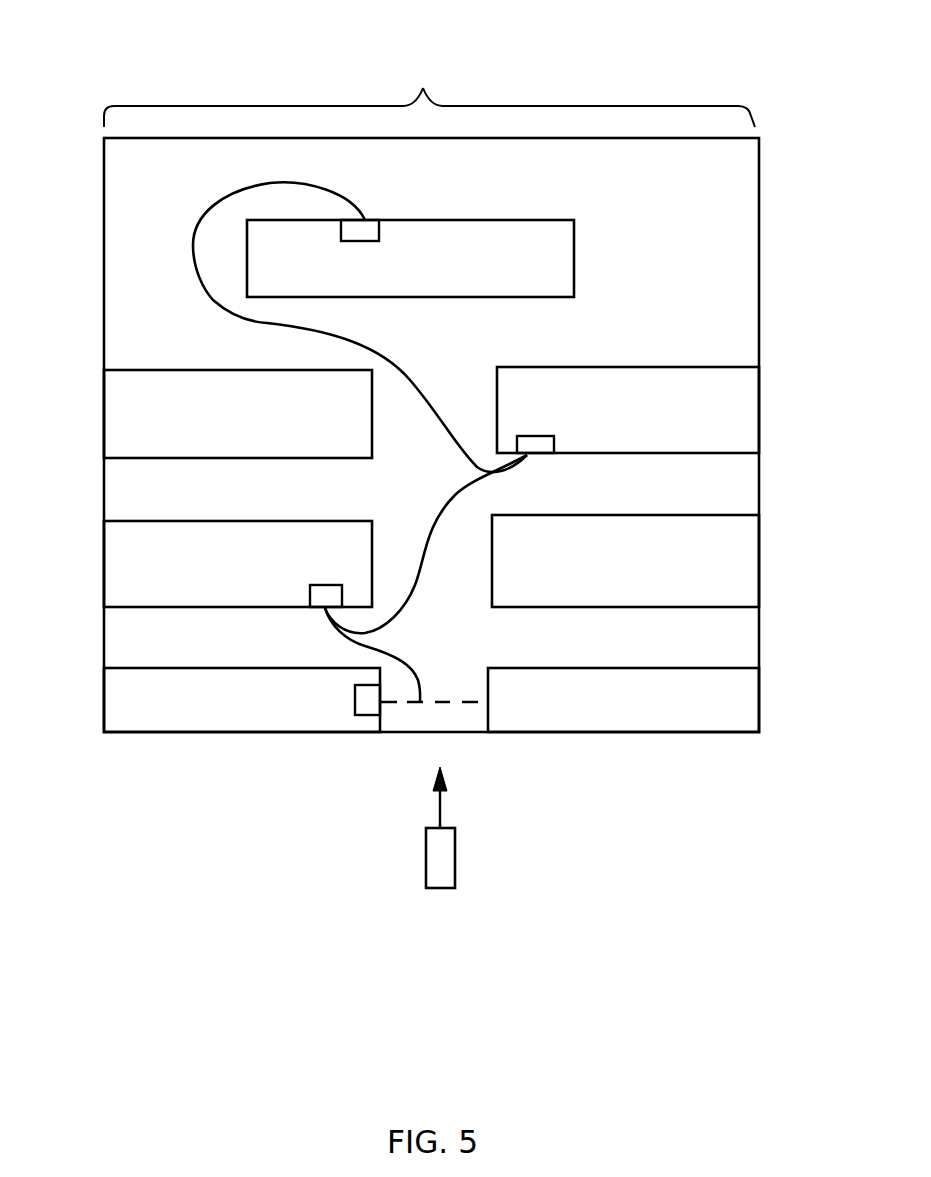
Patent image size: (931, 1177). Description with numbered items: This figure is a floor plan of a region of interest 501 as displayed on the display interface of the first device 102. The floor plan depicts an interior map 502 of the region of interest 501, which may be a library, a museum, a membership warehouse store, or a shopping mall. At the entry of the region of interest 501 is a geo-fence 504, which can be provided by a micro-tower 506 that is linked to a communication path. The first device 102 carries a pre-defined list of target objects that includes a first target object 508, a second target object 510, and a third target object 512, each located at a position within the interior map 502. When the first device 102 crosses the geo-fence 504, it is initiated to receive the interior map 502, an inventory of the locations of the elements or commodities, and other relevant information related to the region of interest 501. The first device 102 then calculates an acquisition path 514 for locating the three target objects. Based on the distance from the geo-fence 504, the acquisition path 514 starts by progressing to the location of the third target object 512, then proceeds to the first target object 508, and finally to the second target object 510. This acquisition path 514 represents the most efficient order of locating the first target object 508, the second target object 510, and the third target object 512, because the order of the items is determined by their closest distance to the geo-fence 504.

The region of interest 501 is at (280, 44).
The interior map 502 is at (423, 88).
The geo-fence 504 is at (435, 702).
The micro-tower 506 is at (355, 702).
The first target object 508 is at (543, 448).
The second target object 510 is at (367, 232).
The third target object 512 is at (327, 595).
The acquisition path 514 is at (200, 280).
The first device 102 is at (443, 856).